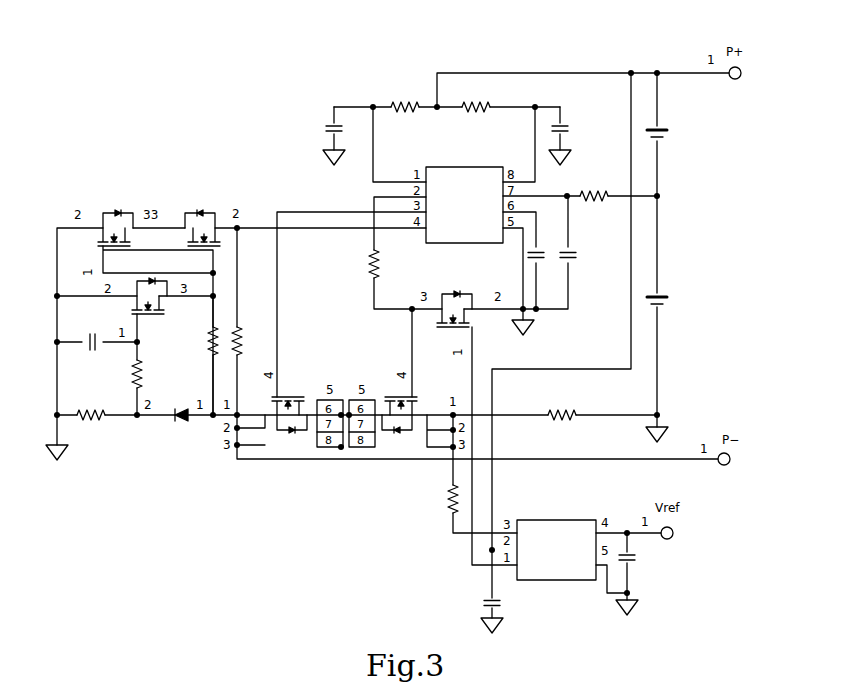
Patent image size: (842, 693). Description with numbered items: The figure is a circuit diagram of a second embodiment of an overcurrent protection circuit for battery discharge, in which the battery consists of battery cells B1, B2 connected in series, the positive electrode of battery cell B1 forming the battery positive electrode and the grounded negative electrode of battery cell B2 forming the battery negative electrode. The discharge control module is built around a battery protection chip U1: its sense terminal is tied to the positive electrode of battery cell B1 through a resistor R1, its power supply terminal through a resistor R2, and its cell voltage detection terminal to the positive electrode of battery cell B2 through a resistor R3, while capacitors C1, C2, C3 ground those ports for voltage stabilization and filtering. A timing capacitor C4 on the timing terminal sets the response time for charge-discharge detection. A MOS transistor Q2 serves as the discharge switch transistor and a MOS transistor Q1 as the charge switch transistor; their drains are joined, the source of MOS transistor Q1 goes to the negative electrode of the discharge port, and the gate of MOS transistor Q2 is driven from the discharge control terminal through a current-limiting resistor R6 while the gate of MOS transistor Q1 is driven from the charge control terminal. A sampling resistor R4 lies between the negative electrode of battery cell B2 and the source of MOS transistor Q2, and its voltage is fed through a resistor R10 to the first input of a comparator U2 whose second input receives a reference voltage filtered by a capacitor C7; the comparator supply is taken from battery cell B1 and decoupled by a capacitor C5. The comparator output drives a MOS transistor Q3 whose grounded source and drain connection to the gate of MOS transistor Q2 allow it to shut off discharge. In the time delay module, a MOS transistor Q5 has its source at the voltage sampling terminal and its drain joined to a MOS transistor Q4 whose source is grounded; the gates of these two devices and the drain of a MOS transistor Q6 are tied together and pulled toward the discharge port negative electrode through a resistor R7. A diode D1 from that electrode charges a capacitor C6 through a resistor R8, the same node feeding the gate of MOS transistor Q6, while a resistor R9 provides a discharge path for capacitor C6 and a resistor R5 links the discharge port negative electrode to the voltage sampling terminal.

The resistor R1 is at (405, 100).
The resistor R2 is at (476, 100).
The resistor R3 is at (594, 189).
The sampling resistor R4 is at (562, 403).
The resistor R5 is at (247, 341).
The resistor R6 is at (383, 264).
The resistor R7 is at (201, 341).
The resistor R8 is at (145, 374).
The resistor R9 is at (91, 403).
The resistor R10 is at (434, 499).
The capacitor C1 is at (341, 136).
The capacitor C2 is at (567, 136).
The capacitor C3 is at (576, 257).
The timing capacitor C4 is at (544, 257).
The capacitor C5 is at (501, 604).
The capacitor C6 is at (94, 332).
The capacitor C7 is at (635, 559).
The MOS transistor Q1 is at (289, 403).
The MOS transistor Q2 is at (410, 403).
The MOS transistor Q3 is at (454, 301).
The MOS transistor Q4 is at (115, 219).
The MOS transistor Q5 is at (202, 219).
The MOS transistor Q6 is at (159, 300).
The diode D1 is at (181, 401).
The battery protection chip U1 is at (464, 185).
The comparator U2 is at (556, 540).
The battery cell B1 is at (669, 128).
The battery cell B2 is at (668, 294).